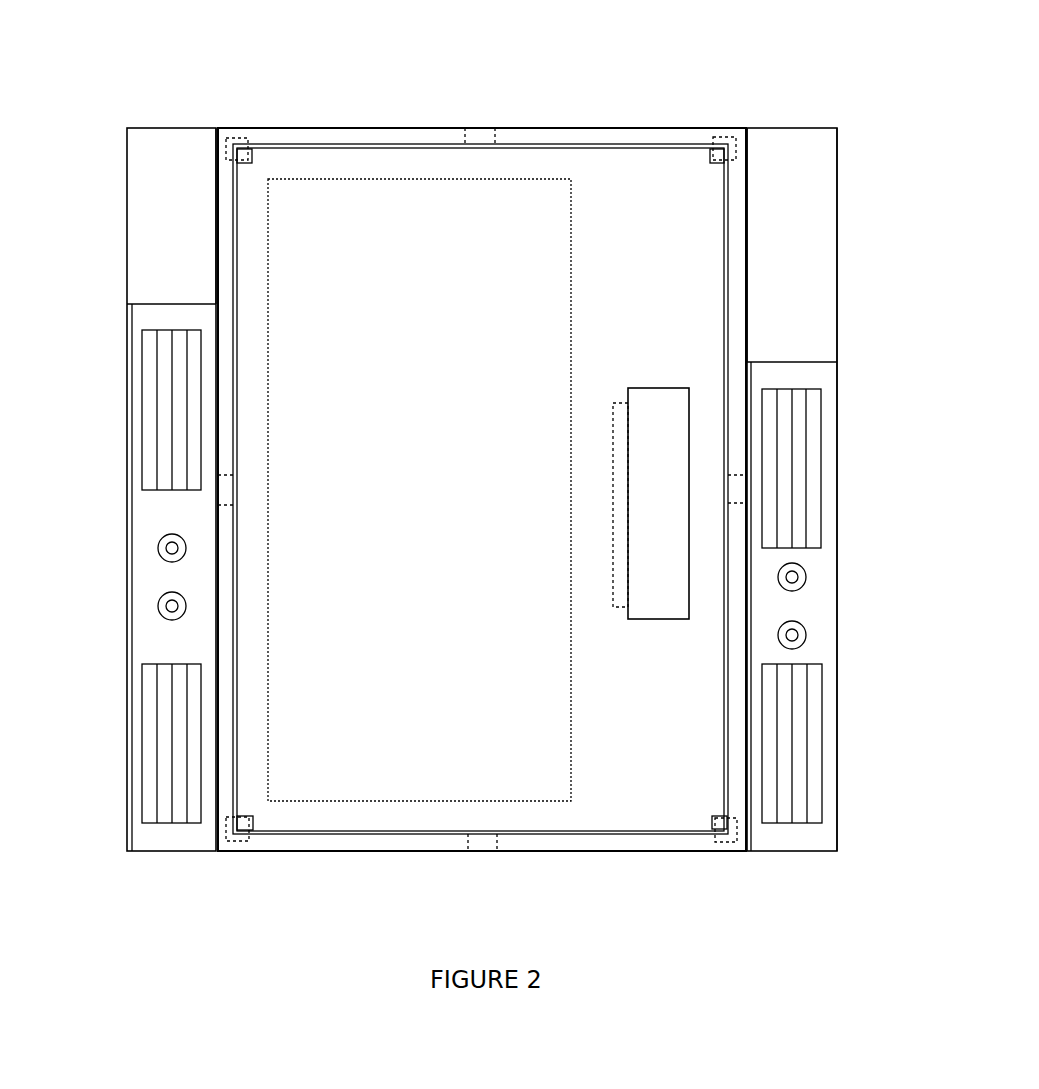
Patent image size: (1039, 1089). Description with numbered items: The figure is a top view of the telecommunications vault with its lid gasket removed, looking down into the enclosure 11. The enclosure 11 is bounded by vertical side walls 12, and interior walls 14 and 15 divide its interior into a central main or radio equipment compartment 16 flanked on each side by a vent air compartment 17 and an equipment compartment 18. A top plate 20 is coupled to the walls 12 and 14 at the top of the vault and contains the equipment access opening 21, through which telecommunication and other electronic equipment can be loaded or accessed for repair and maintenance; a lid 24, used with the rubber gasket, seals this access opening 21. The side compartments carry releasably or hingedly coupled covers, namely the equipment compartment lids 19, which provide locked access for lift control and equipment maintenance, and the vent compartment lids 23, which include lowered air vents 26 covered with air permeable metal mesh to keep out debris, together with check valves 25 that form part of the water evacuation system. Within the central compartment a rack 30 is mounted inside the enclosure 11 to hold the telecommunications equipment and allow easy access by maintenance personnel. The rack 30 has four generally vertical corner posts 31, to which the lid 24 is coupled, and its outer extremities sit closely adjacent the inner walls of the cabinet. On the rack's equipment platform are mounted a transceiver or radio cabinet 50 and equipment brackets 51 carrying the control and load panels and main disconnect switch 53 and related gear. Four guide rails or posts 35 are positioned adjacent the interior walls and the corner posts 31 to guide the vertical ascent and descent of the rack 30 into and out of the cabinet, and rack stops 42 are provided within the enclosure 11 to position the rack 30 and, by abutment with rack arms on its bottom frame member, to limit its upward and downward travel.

The enclosure 11 is at (612, 127).
The vertical side walls 12 is at (374, 128).
The interior wall 14 is at (215, 187).
The interior wall 15 is at (193, 303).
The main or radio equipment compartment 16 is at (593, 804).
The vent air compartment 17 is at (147, 520).
The equipment compartment 18 is at (161, 142).
The equipment compartment lid 19 is at (803, 150).
The top plate 20 is at (675, 135).
The equipment access opening 21 is at (540, 150).
The vent compartment lid 23 is at (830, 372).
The lid 24 is at (403, 160).
The check valves 25 is at (158, 602).
The air vents 26 is at (142, 411).
The rack 30 is at (557, 850).
The posts 31 is at (252, 158).
The guide rails or posts 35 is at (231, 137).
The rack stops 42 is at (483, 135).
The transceiver or radio cabinet 50 is at (425, 366).
The equipment brackets 51 is at (613, 420).
The control and load panels and main disconnect switch 53 is at (651, 388).